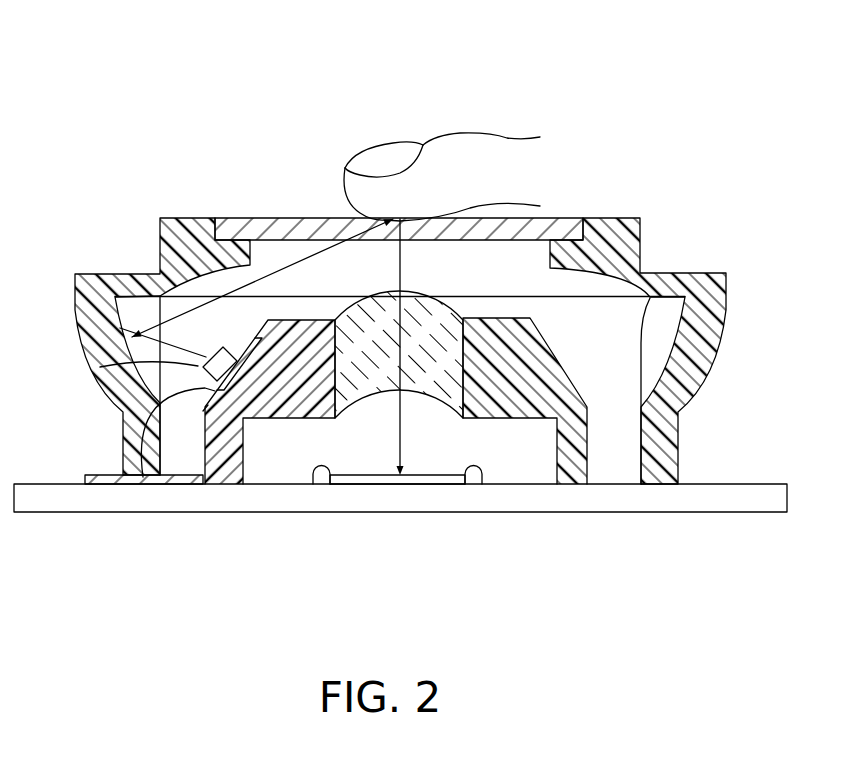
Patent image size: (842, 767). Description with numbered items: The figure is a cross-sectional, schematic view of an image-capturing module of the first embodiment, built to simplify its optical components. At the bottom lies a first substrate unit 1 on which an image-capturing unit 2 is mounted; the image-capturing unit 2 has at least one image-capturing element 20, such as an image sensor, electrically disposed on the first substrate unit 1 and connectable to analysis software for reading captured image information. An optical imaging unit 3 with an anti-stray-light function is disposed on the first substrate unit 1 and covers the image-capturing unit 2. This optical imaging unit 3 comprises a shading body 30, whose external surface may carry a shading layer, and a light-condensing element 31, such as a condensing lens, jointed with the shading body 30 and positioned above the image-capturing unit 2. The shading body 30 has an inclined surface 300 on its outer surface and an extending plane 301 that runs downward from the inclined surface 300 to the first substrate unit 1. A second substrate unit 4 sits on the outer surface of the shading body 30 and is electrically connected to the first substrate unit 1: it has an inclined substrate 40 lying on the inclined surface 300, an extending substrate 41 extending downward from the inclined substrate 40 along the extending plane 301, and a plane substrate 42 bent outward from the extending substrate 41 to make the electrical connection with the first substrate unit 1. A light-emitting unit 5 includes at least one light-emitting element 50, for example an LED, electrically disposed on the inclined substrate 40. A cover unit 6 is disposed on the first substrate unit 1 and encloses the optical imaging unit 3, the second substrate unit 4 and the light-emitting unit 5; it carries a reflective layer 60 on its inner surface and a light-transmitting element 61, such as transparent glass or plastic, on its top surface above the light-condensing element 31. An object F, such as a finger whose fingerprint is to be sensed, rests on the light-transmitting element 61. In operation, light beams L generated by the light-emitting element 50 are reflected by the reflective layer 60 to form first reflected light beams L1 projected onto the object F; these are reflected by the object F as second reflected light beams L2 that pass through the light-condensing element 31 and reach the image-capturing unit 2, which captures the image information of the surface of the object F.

The first substrate unit 1 is at (755, 478).
The image-capturing unit 2 is at (397, 519).
The image-capturing element 20 is at (356, 485).
The optical imaging unit 3 is at (396, 465).
The shading body 30 is at (543, 408).
The light-condensing element 31 is at (495, 420).
The inclined surface 300 is at (290, 419).
The extending plane 301 is at (227, 463).
The second substrate unit 4 is at (147, 456).
The inclined substrate 40 is at (157, 478).
The extending substrate 41 is at (210, 447).
The plane substrate 42 is at (107, 485).
The light-emitting unit 5 is at (100, 367).
The light-emitting element 50 is at (223, 357).
The cover unit 6 is at (400, 305).
The reflective layer 60 is at (137, 296).
The light-transmitting element 61 is at (247, 228).
The object F is at (480, 124).
The light beams L is at (128, 337).
The first reflected light beams L1 is at (315, 252).
The second reflected light beams L2 is at (402, 268).